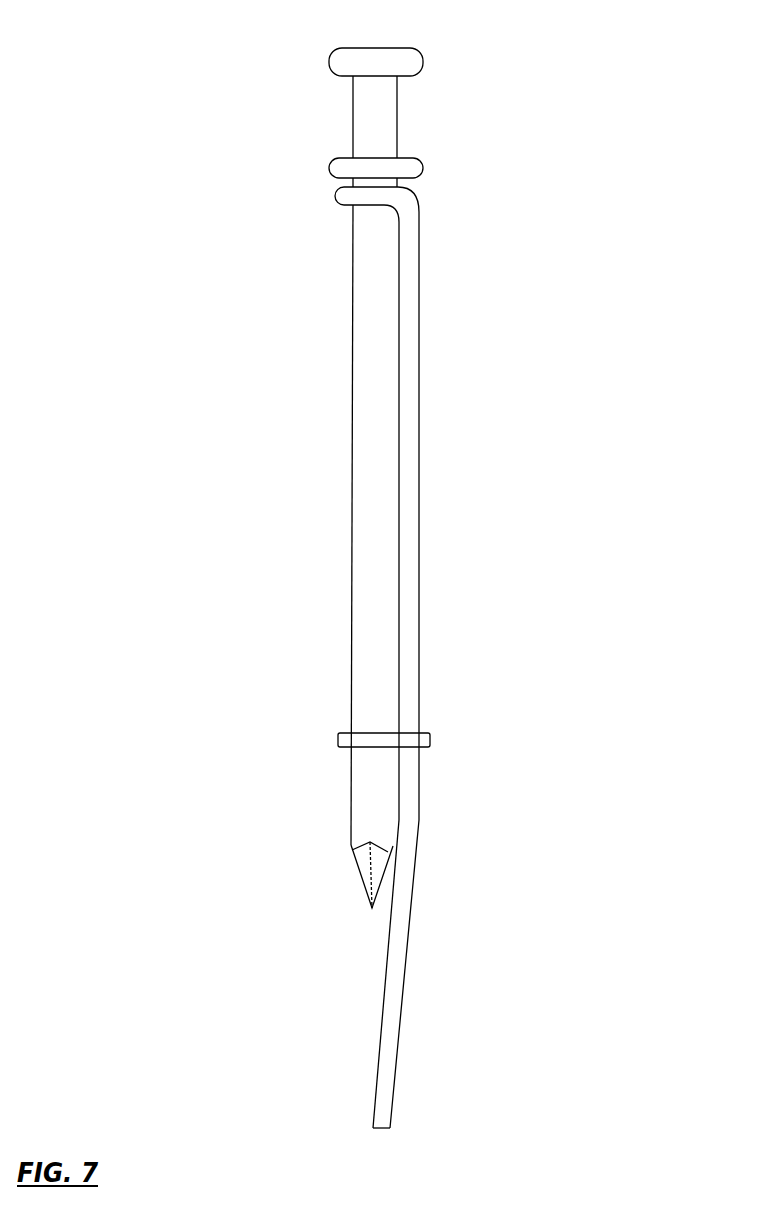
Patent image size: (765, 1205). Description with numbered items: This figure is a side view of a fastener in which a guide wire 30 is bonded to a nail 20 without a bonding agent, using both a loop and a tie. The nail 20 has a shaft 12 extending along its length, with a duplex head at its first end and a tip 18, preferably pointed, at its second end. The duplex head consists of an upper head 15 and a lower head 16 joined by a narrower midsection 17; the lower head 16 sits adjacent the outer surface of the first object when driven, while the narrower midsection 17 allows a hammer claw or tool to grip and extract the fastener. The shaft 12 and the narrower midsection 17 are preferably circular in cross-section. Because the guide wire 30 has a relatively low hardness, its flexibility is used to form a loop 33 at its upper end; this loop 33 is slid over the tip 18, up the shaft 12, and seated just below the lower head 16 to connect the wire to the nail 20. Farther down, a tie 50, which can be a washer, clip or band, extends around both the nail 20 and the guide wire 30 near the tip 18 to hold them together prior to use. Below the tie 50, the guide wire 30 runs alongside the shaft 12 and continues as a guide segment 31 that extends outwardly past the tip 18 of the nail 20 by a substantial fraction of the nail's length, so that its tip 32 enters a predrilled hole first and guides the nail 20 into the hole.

The shaft 12 is at (345, 593).
The upper head 15 is at (425, 60).
The lower head 16 is at (428, 165).
The narrower midsection 17 is at (357, 118).
The tip 18 is at (372, 915).
The nail 20 is at (372, 375).
The guide wire 30 is at (420, 478).
The guide segment 31 is at (406, 987).
The tip 32 is at (382, 1128).
The loop 33 is at (335, 193).
The tie 50 is at (430, 739).